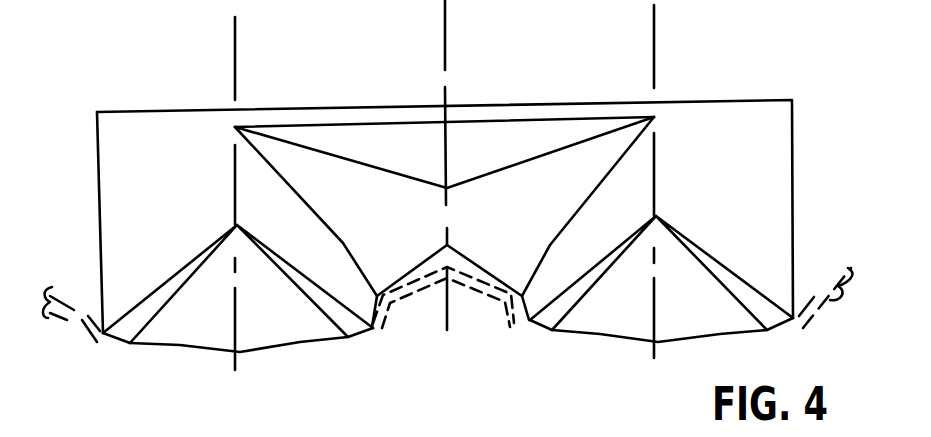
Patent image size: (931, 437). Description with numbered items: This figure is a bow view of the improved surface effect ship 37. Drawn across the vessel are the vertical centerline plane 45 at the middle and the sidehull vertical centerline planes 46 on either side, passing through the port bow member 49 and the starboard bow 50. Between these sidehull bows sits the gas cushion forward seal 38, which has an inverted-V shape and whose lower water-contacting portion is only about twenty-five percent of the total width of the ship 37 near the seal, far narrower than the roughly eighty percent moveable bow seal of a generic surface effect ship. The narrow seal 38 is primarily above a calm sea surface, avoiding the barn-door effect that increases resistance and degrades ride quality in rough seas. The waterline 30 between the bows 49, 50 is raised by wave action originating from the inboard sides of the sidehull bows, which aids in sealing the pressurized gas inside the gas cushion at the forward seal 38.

The waterline 30 is at (488, 293).
The improved surface effect ship 37 is at (793, 218).
The gas cushion forward seal member 38 is at (444, 222).
The vertical centerline plane 45 is at (443, 57).
The sidehull vertical centerline planes 46 is at (233, 78).
The port bow member 49 is at (661, 279).
The starboard bow 50 is at (238, 288).